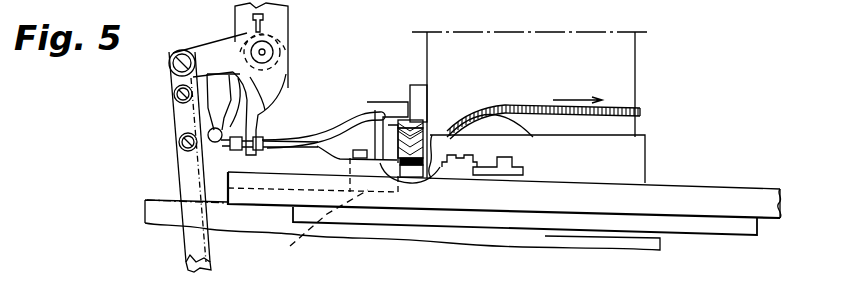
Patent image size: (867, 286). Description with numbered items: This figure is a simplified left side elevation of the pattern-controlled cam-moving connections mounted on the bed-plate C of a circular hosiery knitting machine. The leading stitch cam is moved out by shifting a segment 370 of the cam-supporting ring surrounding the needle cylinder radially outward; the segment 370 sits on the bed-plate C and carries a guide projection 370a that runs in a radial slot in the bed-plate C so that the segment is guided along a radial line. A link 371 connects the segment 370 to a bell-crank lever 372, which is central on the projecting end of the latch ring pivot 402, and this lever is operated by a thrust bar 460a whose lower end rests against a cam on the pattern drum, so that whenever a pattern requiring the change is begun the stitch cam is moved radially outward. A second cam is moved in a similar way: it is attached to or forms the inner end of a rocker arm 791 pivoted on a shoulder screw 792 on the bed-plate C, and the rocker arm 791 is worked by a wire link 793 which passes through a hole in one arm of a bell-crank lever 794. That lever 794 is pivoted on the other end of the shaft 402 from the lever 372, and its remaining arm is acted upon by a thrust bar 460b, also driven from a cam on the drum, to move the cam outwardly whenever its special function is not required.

The latch ring pivot 402 is at (253, 45).
The bell-crank lever 794 is at (262, 98).
The wire link 793 is at (357, 107).
The link 371 is at (288, 132).
The bell-crank lever 372 is at (217, 112).
The segment of the cam-supporting ring 370 is at (365, 168).
The guide projection 370a is at (306, 230).
The thrust bar 460b is at (172, 175).
The thrust bar 460a is at (193, 258).
The rocker arm 791 is at (440, 162).
The shoulder screw 792 is at (477, 167).
The bed-plate C is at (791, 202).